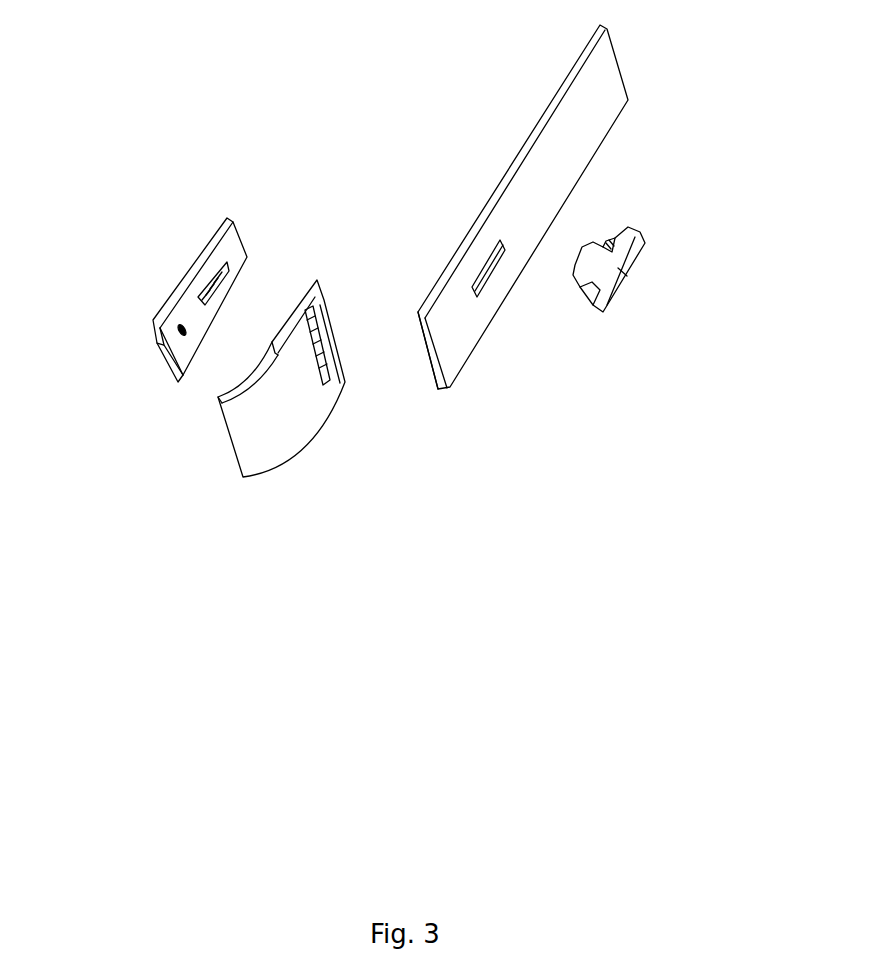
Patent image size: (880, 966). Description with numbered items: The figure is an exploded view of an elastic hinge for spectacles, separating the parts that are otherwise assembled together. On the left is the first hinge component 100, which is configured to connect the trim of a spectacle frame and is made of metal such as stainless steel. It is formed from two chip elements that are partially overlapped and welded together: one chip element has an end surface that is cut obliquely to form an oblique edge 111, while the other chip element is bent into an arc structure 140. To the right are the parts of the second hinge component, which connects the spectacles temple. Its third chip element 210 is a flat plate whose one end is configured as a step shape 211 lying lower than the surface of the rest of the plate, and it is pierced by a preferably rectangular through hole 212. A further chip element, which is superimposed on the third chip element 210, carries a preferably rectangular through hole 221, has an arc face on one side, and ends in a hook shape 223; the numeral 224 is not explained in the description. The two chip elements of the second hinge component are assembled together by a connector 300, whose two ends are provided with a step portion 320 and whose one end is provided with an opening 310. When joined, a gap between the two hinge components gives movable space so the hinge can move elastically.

The first hinge component 100 is at (308, 455).
The oblique edge 111 is at (277, 352).
The arc structure 140 is at (283, 420).
The third chip element 210 is at (562, 279).
The step shape 211 is at (422, 310).
The through hole 212 is at (490, 273).
The through hole 221 is at (217, 265).
The hook shape 223 is at (175, 328).
The cover plate 224 is at (133, 308).
The connector 300 is at (704, 338).
The opening 310 is at (612, 240).
The step portion 320 is at (593, 287).